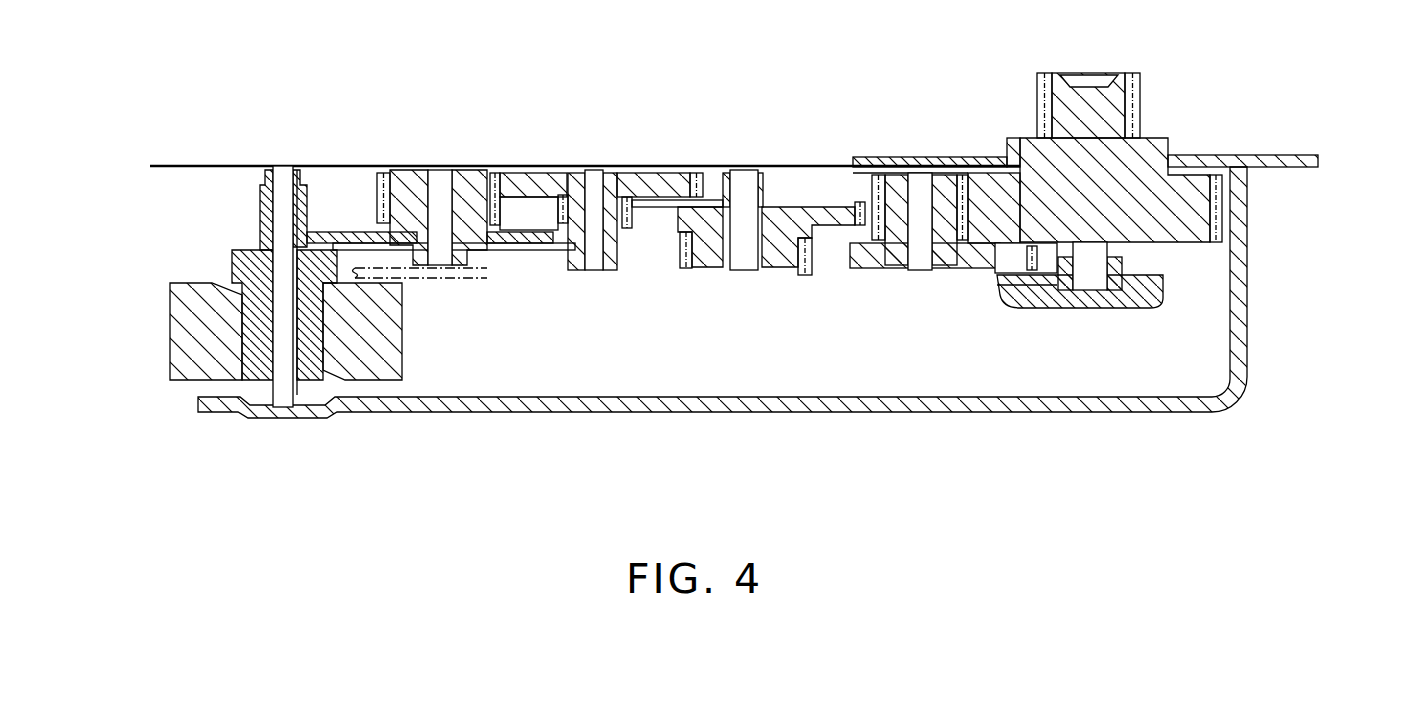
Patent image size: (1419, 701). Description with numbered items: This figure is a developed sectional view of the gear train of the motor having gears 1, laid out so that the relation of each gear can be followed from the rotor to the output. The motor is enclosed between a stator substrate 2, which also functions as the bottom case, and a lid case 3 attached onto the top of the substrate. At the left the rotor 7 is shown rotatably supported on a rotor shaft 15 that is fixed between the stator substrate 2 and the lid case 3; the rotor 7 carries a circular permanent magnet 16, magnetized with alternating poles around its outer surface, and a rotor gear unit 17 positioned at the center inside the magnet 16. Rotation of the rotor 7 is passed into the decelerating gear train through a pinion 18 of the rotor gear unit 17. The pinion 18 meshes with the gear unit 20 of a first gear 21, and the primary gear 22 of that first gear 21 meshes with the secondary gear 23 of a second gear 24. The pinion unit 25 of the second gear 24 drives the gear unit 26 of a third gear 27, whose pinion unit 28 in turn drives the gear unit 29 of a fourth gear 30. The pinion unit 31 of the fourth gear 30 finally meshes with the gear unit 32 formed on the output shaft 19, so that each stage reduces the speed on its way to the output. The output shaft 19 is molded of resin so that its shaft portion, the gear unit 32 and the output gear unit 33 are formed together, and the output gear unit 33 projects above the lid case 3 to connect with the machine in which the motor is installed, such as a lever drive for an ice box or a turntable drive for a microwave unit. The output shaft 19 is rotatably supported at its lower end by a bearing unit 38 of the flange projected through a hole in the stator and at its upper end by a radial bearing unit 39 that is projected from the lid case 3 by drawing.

The motor having gears 1 is at (1290, 58).
The stator substrate 2 is at (1248, 352).
The lid case 3 is at (1263, 155).
The rotor 7 is at (155, 348).
The rotor shaft 15 is at (290, 397).
The permanent magnet 16 is at (392, 337).
The rotor gear unit 17 is at (233, 250).
The pinion 18 is at (260, 200).
The output shaft 19 is at (1089, 66).
The gear unit 20 is at (567, 262).
The first gear 21 is at (514, 262).
The primary gear 22 is at (380, 215).
The secondary gear 23 is at (697, 175).
The second gear 24 is at (630, 275).
The pinion unit 25 is at (563, 195).
The gear unit 26 is at (862, 200).
The third gear 27 is at (751, 286).
The pinion unit 28 is at (688, 270).
The gear unit 29 is at (808, 276).
The fourth gear 30 is at (913, 284).
The pinion unit 31 is at (873, 178).
The gear unit 32 is at (1215, 244).
The output gear unit 33 is at (1137, 104).
The bearing unit 38 is at (1062, 290).
The radial bearing unit 39 is at (1008, 150).